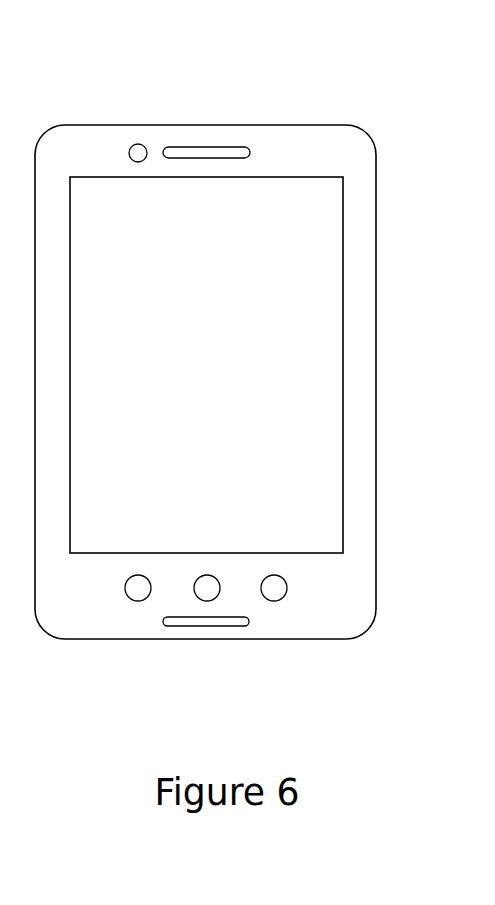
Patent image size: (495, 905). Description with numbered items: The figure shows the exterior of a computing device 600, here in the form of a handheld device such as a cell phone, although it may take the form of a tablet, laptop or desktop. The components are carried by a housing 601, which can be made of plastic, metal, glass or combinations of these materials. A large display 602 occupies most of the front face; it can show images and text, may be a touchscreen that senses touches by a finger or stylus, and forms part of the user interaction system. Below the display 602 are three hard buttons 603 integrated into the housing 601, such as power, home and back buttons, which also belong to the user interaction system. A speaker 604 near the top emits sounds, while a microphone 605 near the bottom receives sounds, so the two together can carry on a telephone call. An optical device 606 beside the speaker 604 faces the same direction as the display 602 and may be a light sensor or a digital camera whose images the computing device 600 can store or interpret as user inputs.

The computing device 600 is at (275, 90).
The housing 601 is at (380, 318).
The display 602 is at (345, 387).
The hard buttons 603 is at (136, 601).
The speaker 604 is at (216, 147).
The microphone 605 is at (233, 623).
The optical device 606 is at (137, 143).